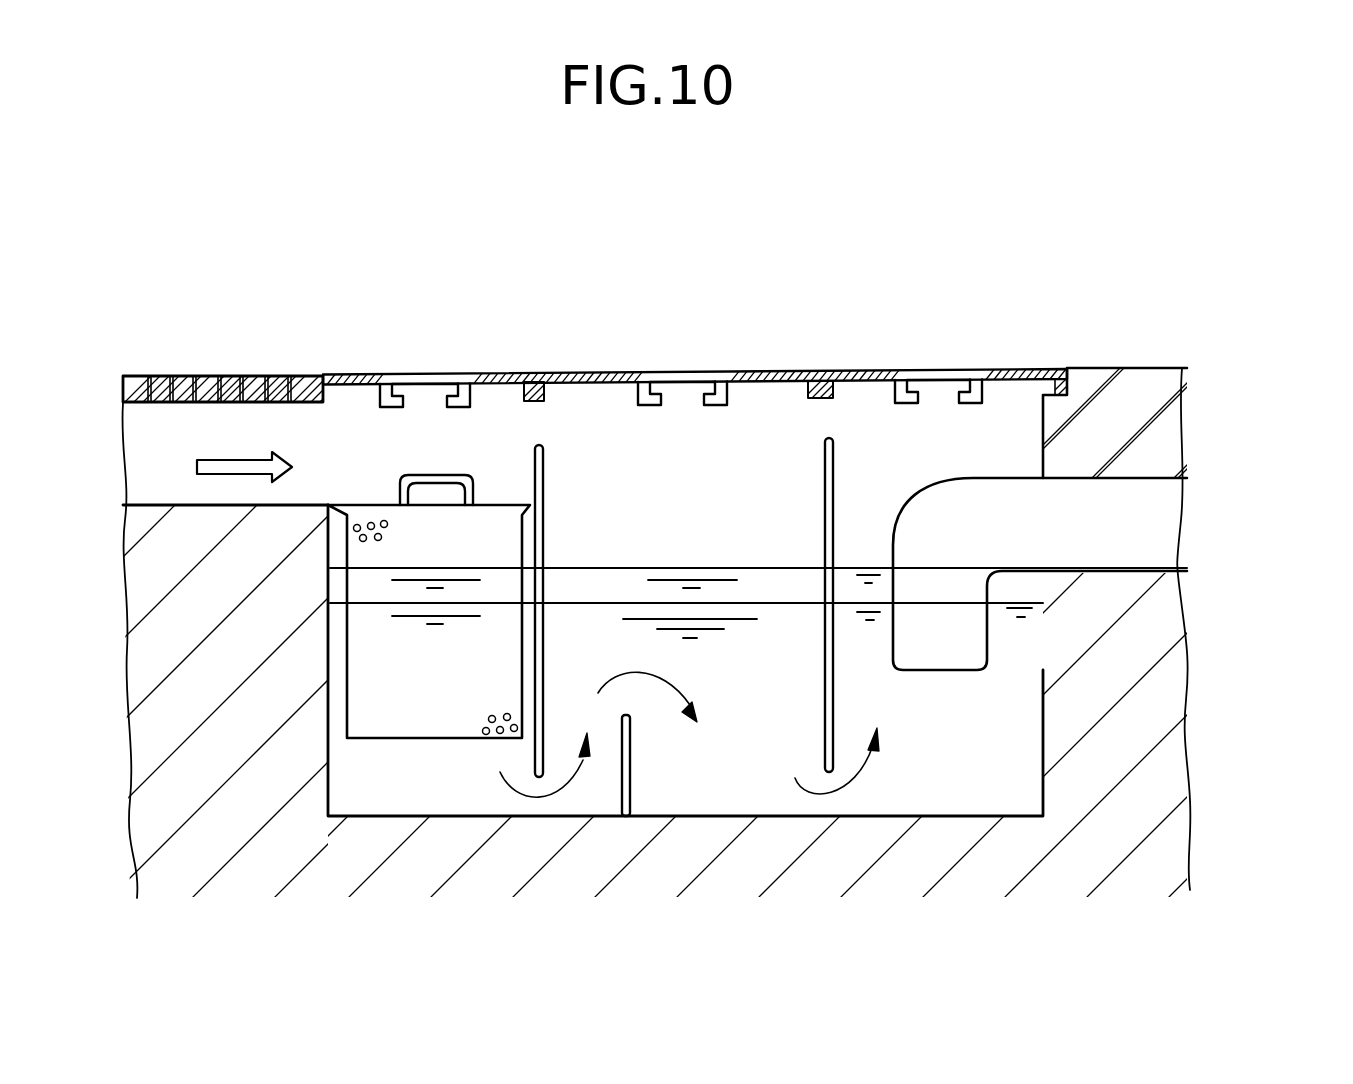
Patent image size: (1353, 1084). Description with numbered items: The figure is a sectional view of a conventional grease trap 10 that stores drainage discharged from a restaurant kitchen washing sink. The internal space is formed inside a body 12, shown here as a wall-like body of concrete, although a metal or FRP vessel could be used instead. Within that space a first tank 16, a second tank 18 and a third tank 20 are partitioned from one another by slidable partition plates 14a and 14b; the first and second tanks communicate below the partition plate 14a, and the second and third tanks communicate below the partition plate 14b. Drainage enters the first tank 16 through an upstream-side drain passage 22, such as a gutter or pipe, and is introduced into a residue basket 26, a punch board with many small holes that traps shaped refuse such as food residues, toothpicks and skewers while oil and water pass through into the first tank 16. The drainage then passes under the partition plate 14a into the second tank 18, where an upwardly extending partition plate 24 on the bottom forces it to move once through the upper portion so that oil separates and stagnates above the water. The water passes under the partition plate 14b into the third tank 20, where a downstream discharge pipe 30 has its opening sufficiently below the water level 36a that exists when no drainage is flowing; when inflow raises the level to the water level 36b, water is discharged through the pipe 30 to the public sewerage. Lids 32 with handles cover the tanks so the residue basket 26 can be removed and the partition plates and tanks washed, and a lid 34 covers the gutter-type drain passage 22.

The grease trap 10 is at (945, 345).
The body 12 is at (1130, 407).
The partition plate 14a is at (543, 468).
The partition plate 14b is at (825, 474).
The first tank 16 is at (431, 798).
The second tank 18 is at (754, 796).
The third tank 20 is at (963, 796).
The upstream-side drain passage 22 is at (160, 450).
The partition plate 24 is at (630, 758).
The residue basket 26 is at (400, 545).
The downstream discharge pipe 30 is at (937, 642).
The lids 32 is at (551, 374).
The lid 34 is at (232, 376).
The water level 36a is at (603, 602).
The water level 36b is at (667, 566).